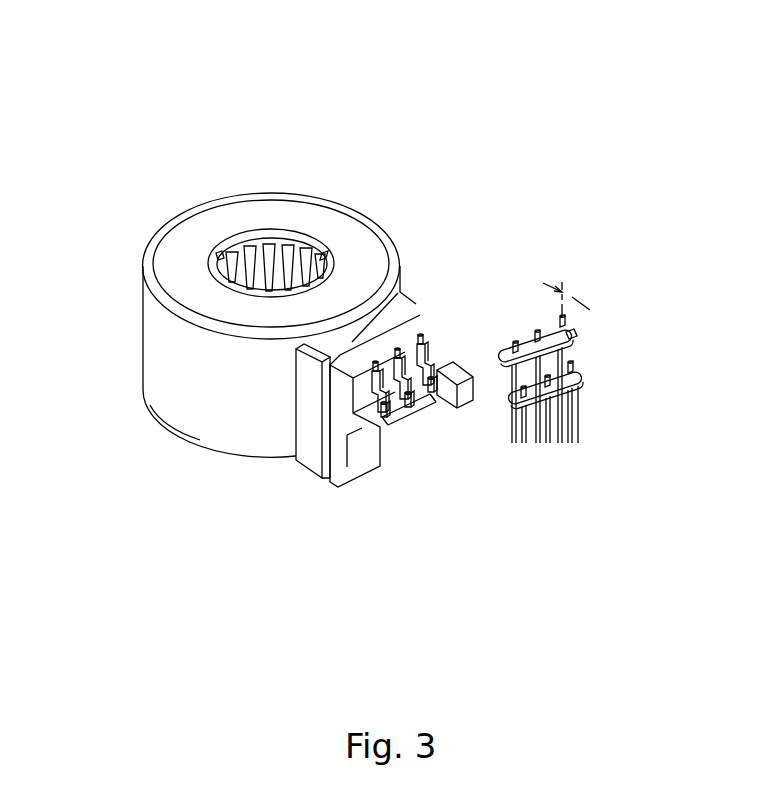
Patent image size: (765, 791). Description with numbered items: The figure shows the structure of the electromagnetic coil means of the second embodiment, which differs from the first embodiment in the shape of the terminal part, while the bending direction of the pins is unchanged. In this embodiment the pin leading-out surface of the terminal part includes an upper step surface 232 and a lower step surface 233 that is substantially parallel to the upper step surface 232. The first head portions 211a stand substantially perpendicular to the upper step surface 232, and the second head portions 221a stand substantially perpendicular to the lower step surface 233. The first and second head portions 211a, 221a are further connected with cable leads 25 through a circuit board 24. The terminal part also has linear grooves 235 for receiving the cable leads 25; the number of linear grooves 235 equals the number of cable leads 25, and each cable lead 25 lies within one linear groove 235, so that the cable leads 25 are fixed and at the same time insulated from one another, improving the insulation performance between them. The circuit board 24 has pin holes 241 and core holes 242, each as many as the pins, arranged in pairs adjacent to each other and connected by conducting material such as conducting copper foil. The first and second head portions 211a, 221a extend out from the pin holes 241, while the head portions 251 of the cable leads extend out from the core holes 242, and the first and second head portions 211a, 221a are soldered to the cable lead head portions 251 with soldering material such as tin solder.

The first head portions 211a is at (430, 328).
The second head portions 221a is at (450, 392).
The upper step surface 232 is at (358, 385).
The lower step surface 233 is at (375, 420).
The linear grooves 235 is at (380, 410).
The circuit board 24 is at (572, 393).
The cable leads 25 is at (571, 347).
The pin holes 241 is at (562, 293).
The core holes 242 is at (571, 338).
The head portions of the cable leads 251 is at (563, 327).